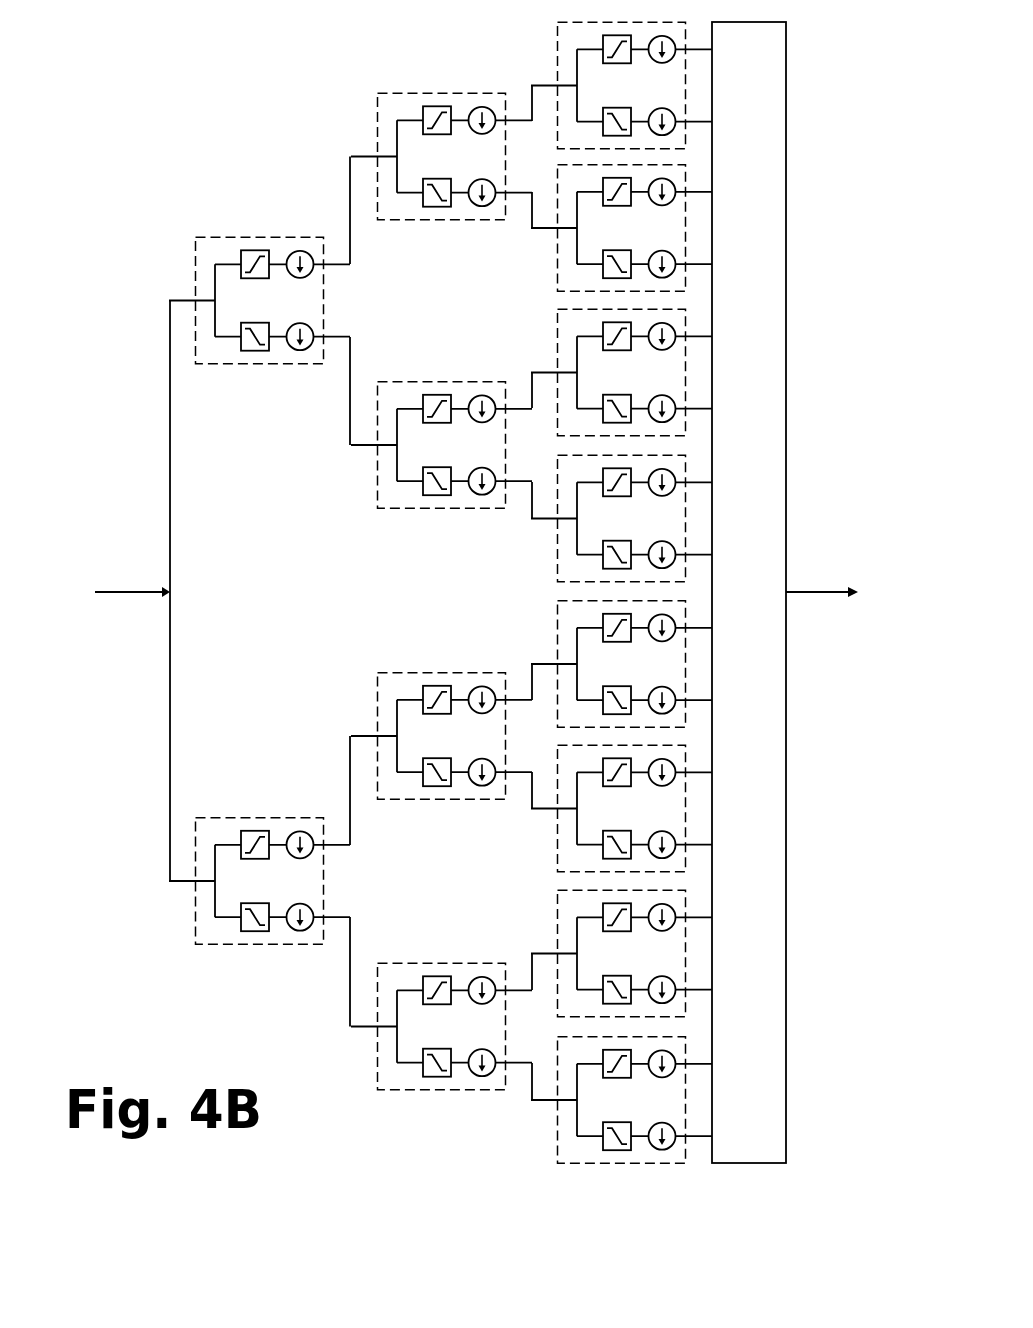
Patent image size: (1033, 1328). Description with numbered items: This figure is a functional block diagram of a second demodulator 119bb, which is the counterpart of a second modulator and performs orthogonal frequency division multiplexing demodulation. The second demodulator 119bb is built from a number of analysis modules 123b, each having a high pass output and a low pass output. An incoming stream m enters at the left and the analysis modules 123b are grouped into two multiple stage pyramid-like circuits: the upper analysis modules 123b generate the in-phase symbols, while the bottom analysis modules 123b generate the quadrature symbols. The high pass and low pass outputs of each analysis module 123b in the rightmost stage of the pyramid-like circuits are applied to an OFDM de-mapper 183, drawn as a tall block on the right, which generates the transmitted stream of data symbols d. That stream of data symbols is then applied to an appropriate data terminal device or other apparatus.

The second demodulator 119bb is at (147, 176).
The analysis module 123b is at (431, 86).
The OFDM de-mapper 183 is at (793, 381).